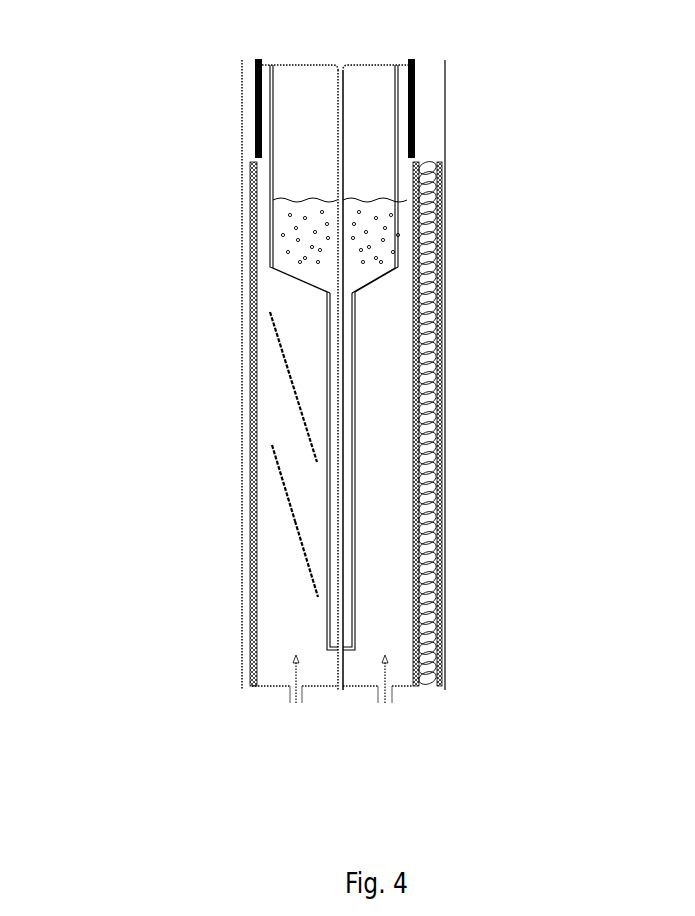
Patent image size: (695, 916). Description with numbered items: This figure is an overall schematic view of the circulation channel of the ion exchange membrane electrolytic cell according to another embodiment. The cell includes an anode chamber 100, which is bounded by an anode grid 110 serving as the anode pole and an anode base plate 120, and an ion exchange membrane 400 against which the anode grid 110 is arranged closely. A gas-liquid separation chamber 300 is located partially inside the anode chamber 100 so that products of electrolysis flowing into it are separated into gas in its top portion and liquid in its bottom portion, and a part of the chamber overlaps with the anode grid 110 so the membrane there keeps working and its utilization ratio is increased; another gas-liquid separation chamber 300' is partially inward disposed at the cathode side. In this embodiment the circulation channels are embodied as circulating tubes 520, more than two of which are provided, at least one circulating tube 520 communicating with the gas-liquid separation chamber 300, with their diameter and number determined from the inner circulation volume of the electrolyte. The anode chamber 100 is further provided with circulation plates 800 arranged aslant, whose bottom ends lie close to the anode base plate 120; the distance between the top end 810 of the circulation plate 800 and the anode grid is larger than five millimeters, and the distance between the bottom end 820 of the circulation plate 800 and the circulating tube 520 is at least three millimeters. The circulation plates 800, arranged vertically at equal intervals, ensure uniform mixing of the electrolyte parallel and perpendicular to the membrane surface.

The anode chamber 100 is at (275, 382).
The anode grid 110 is at (248, 431).
The anode base plate 120 is at (337, 663).
The gas-liquid separation chamber 300 is at (217, 173).
The gas-liquid separation chamber 300' is at (452, 153).
The ion exchange membrane 400 is at (445, 558).
The circulating tube 520 is at (327, 616).
The circulation plate 800 is at (164, 518).
The top end of the circulation plate 810 is at (272, 445).
The bottom end of the circulation plate 820 is at (318, 597).